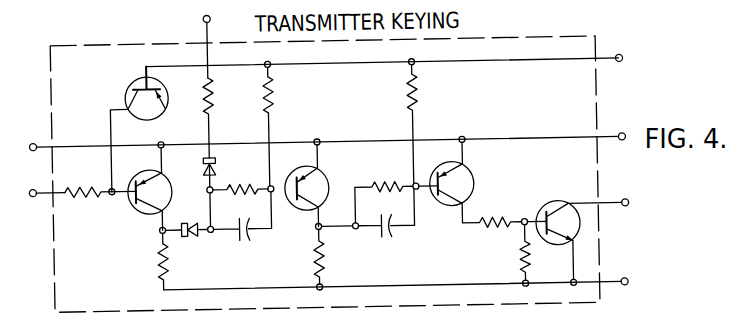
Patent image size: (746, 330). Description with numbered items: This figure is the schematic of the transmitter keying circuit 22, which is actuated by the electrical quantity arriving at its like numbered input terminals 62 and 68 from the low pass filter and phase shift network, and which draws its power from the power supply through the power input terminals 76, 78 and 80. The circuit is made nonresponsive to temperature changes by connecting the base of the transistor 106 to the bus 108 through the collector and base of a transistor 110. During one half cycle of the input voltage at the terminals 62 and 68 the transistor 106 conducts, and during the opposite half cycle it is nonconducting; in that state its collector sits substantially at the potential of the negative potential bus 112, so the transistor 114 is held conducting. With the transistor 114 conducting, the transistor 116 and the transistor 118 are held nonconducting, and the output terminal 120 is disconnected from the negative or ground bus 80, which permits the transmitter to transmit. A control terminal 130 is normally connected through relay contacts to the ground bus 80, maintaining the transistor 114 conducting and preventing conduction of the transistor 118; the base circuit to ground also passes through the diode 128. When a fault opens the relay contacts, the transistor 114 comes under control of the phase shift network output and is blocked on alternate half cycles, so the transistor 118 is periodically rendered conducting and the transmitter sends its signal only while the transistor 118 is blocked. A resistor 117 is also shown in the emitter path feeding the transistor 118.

The transmitter keying circuit 22 is at (82, 41).
The input terminal 62 is at (43, 210).
The input terminal 68 is at (33, 135).
The power input terminal 76 is at (620, 60).
The power input terminal 78 is at (622, 138).
The ground bus terminal 80 is at (622, 284).
The transistor 106 is at (132, 208).
The bus 108 is at (336, 66).
The transistor 110 is at (131, 84).
The negative potential bus 112 is at (206, 287).
The transistor 114 is at (322, 172).
The transistor 116 is at (472, 175).
The resistor 117 is at (524, 222).
The transistor 118 is at (565, 206).
The output terminal 120 is at (624, 204).
The diode 128 is at (218, 161).
The control terminal 130 is at (206, 17).